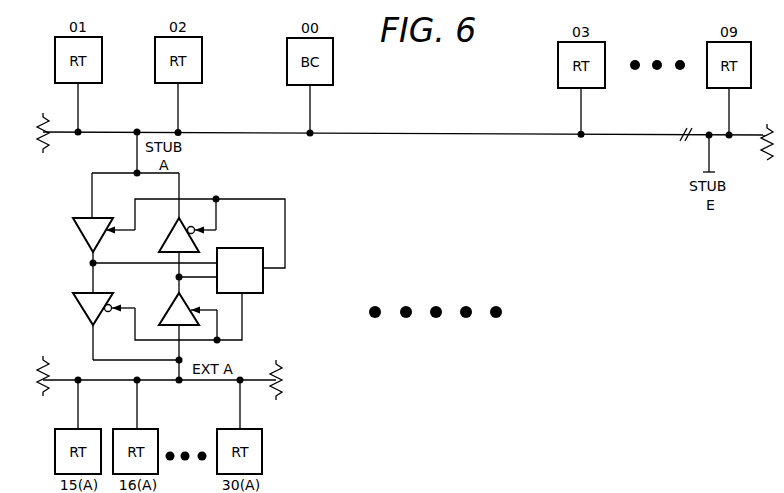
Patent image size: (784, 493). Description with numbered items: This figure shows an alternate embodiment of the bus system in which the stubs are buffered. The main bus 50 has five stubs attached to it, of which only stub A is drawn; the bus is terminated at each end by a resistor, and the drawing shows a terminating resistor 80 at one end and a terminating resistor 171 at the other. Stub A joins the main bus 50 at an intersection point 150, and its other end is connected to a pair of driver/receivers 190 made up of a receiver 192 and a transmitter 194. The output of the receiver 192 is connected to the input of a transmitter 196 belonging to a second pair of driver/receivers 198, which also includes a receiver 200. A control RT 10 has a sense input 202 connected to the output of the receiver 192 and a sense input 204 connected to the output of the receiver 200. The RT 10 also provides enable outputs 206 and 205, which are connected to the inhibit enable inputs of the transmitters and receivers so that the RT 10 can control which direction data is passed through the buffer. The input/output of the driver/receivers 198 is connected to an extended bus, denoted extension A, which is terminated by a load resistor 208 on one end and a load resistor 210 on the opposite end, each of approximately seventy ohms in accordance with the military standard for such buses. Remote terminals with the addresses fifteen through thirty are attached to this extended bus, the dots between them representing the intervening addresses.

The control RT 10 is at (240, 261).
The main bus 50 is at (283, 130).
The bus terminating resistor 80 is at (48, 148).
The intersection point 150 is at (136, 130).
The bus terminating resistor 171 is at (761, 145).
The pair of driver/receivers 190 is at (74, 214).
The receiver 192 is at (88, 238).
The transmitter 194 is at (166, 238).
The transmitter 196 is at (83, 304).
The pair of driver/receivers 198 is at (78, 325).
The receiver 200 is at (172, 306).
The sense input 202 is at (97, 266).
The sense input 204 is at (186, 269).
The enable output 205 is at (288, 219).
The enable output 206 is at (243, 325).
The load resistor 208 is at (280, 363).
The load resistor 210 is at (46, 366).